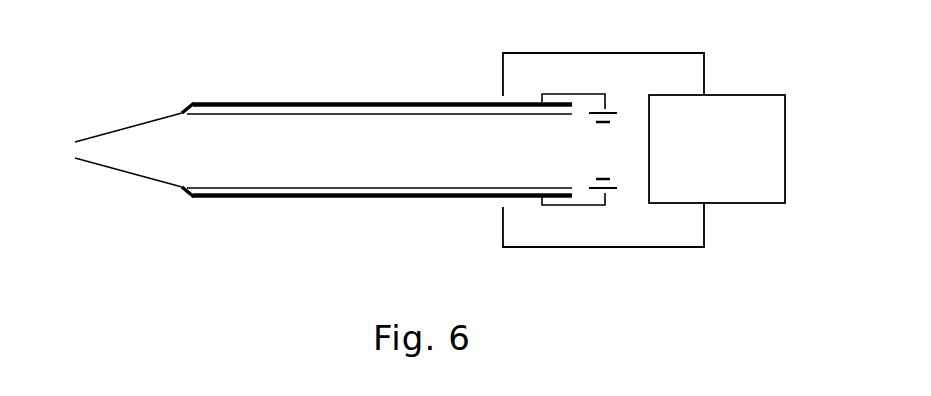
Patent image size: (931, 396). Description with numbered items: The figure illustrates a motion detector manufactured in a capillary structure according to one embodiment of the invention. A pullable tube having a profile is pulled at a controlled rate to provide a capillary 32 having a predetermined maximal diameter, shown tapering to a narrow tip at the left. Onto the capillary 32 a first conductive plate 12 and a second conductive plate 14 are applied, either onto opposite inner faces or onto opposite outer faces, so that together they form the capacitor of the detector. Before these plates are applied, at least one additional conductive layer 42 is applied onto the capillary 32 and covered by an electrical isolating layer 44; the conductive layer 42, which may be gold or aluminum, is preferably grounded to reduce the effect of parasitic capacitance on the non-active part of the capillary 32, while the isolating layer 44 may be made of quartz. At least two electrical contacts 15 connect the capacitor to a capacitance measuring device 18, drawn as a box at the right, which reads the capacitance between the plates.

The first conductive plate 12 is at (123, 178).
The second conductive plate 14 is at (123, 122).
The capillary 32 is at (152, 152).
The additional conductive layer 42 is at (348, 94).
The electrical isolating layer 44 is at (264, 104).
The electrical contacts 15 is at (603, 152).
The capacitance measuring device 18 is at (717, 149).